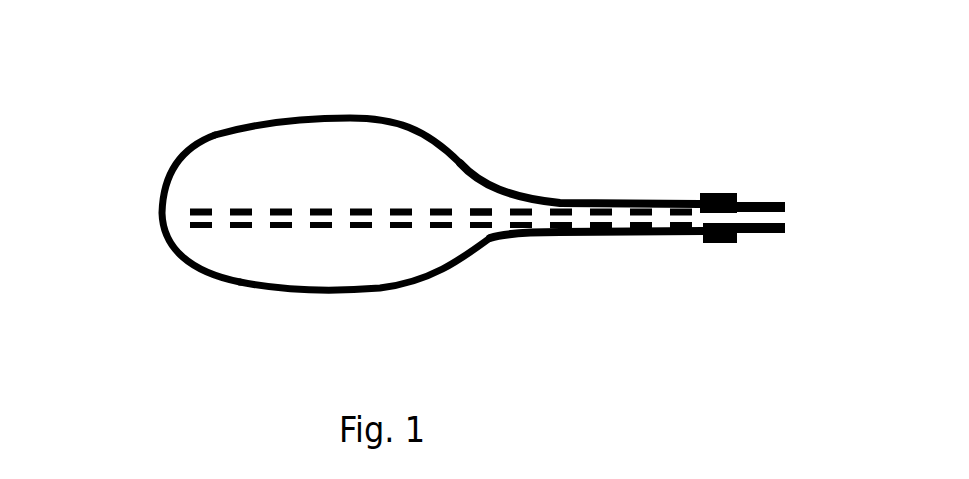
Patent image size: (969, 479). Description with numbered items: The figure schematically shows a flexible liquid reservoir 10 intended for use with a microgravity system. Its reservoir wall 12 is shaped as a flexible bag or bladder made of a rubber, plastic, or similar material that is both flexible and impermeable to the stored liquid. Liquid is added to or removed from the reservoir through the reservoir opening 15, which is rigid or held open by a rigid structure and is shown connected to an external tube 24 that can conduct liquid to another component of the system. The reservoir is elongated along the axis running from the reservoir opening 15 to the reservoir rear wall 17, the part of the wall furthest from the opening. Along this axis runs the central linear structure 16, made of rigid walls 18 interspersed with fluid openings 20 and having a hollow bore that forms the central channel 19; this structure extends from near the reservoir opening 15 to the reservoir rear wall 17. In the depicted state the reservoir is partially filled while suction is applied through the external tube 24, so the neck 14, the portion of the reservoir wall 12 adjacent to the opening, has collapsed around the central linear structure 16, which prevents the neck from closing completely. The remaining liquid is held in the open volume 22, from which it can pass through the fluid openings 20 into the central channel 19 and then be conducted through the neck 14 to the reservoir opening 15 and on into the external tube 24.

The flexible liquid reservoir 10 is at (157, 86).
The reservoir wall 12 is at (181, 257).
The neck 14 is at (563, 197).
The reservoir opening 15 is at (713, 192).
The central linear structure 16 is at (311, 169).
The reservoir rear wall 17 is at (160, 211).
The rigid walls 18 is at (318, 226).
The central channel 19 is at (491, 215).
The fluid openings 20 is at (463, 213).
The open volume 22 is at (355, 258).
The external tube 24 is at (757, 233).